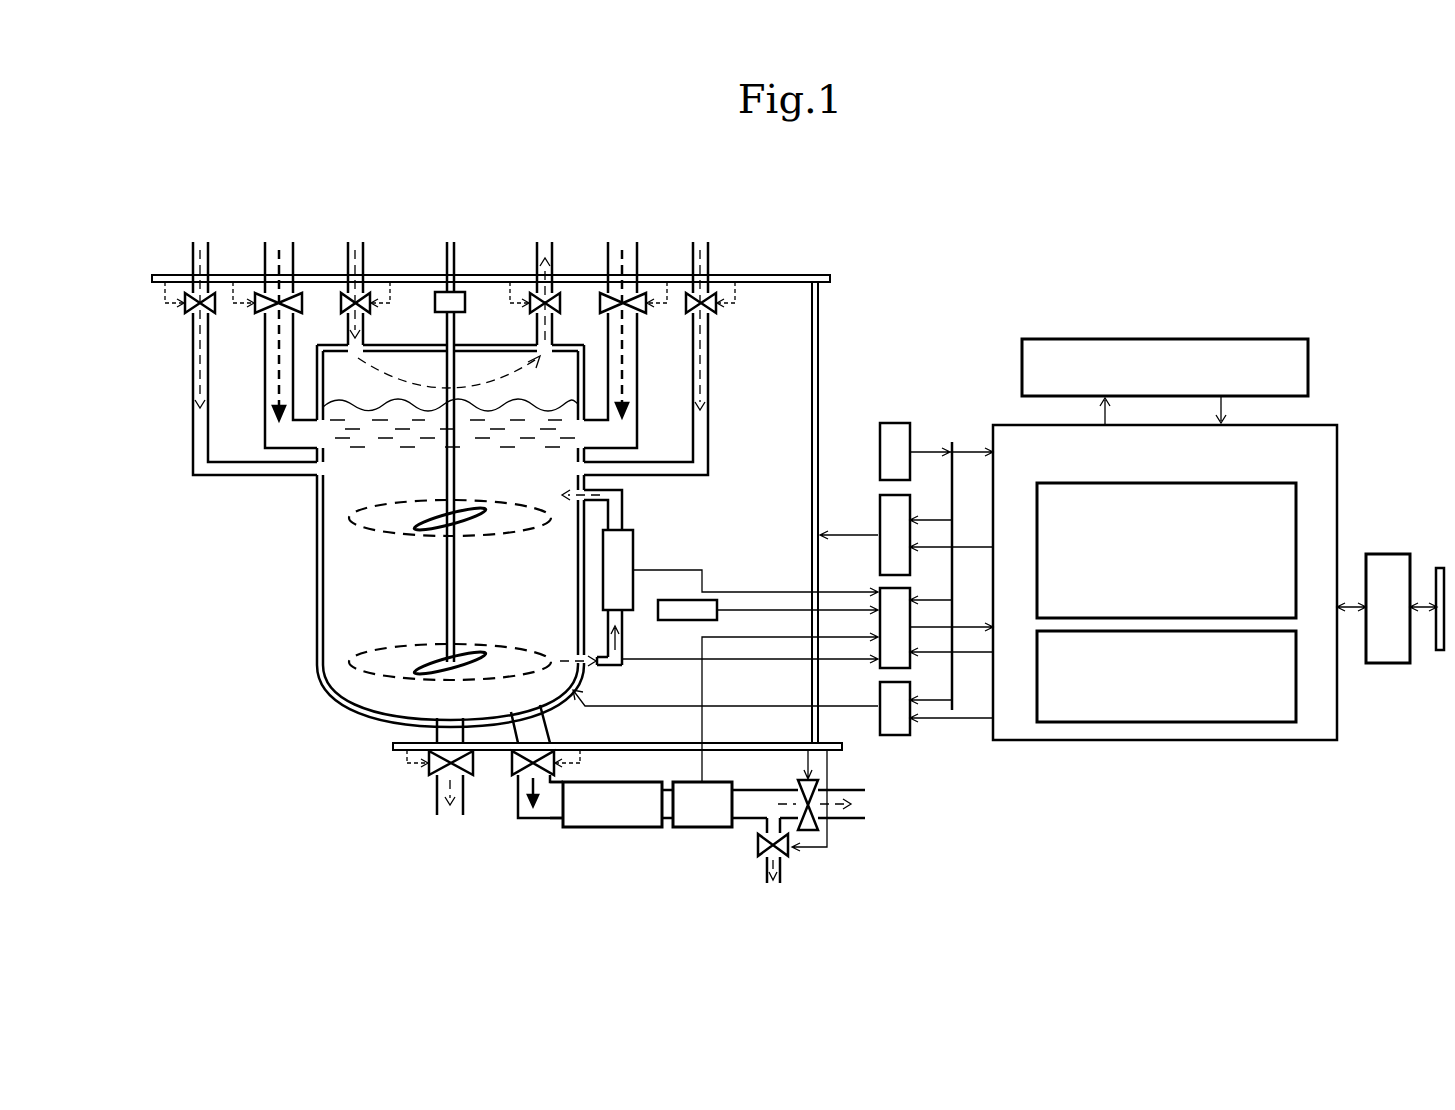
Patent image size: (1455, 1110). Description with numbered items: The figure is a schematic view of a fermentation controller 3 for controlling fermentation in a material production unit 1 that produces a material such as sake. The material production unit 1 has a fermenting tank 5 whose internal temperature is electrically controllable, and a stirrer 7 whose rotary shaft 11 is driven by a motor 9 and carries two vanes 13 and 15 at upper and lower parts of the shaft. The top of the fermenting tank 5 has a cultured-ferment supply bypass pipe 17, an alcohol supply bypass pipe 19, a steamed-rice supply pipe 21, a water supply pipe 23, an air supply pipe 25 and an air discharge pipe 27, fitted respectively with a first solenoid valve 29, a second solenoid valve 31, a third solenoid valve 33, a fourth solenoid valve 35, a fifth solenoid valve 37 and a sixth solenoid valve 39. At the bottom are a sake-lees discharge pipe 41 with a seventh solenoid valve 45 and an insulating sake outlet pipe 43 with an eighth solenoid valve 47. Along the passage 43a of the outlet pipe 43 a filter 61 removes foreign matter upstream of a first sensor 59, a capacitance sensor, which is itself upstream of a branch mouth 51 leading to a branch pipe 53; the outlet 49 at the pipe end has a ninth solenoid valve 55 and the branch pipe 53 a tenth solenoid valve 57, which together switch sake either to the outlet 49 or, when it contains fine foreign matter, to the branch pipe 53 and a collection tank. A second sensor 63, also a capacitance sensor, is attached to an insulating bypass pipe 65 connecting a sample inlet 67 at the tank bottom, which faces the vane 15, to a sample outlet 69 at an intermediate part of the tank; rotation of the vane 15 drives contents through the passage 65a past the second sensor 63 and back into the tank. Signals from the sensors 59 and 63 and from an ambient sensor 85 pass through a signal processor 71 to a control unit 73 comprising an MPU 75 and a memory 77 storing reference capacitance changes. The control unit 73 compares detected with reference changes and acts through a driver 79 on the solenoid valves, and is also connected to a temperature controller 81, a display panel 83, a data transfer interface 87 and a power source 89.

The material production unit 1 is at (489, 240).
The fermentation controller 3 is at (1100, 318).
The fermenting tank 5 is at (317, 612).
The stirrer 7 is at (451, 238).
The motor 9 is at (435, 305).
The rotary shaft 11 is at (456, 470).
The vane 13 is at (425, 524).
The vane 15 is at (433, 660).
The cultured-ferment supply bypass pipe 17 is at (208, 246).
The alcohol supply bypass pipe 19 is at (708, 248).
The steamed-rice supply pipe 21 is at (293, 248).
The water supply pipe 23 is at (637, 248).
The air supply pipe 25 is at (363, 248).
The air discharge pipe 27 is at (552, 248).
The first solenoid valve 29 is at (185, 316).
The second solenoid valve 31 is at (717, 316).
The third solenoid valve 33 is at (256, 316).
The fourth solenoid valve 35 is at (650, 316).
The fifth solenoid valve 37 is at (343, 310).
The sixth solenoid valve 39 is at (560, 314).
The sake-lees discharge pipe 41 is at (437, 808).
The sake outlet pipe 43 is at (533, 822).
The passage 43a is at (553, 808).
The seventh solenoid valve 45 is at (428, 764).
The eighth solenoid valve 47 is at (518, 772).
The outlet 49 is at (845, 820).
The branch mouth 51 is at (765, 812).
The branch pipe 53 is at (767, 880).
The ninth solenoid valve 55 is at (800, 783).
The tenth solenoid valve 57 is at (790, 858).
The first sensor 59 is at (683, 829).
The filter 61 is at (617, 829).
The second sensor 63 is at (636, 556).
The bypass pipe 65 is at (626, 495).
The passage 65a is at (624, 522).
The sample inlet 67 is at (575, 657).
The sample outlet 69 is at (580, 488).
The signal processor 71 is at (880, 592).
The control unit 73 is at (1325, 425).
The MPU 75 is at (1297, 497).
The memory 77 is at (1185, 723).
The driver 79 is at (880, 500).
The temperature controller 81 is at (890, 737).
The display panel 83 is at (1212, 339).
The ambient sensor 85 is at (675, 621).
The data transfer interface 87 is at (1398, 554).
The power source 89 is at (880, 430).